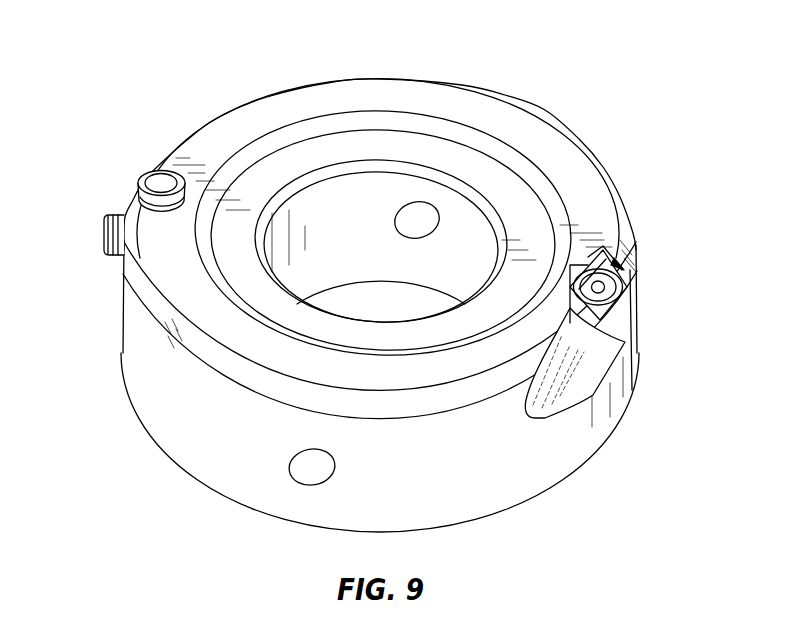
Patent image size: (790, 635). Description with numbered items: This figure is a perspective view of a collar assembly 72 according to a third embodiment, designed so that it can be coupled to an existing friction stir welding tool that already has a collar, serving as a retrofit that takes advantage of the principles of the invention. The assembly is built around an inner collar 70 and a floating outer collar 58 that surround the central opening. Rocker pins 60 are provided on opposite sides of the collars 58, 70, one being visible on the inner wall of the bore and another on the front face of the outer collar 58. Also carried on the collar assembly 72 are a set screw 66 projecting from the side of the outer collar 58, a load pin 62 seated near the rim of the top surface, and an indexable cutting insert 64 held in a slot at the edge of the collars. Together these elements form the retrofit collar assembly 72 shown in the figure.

The floating outer collar 58 is at (518, 462).
The rocker pins 60 is at (410, 216).
The load pin 62 is at (155, 182).
The indexable cutting insert 64 is at (645, 254).
The set screw 66 is at (100, 232).
The inner collar 70 is at (520, 212).
The collar assembly 72 is at (537, 82).